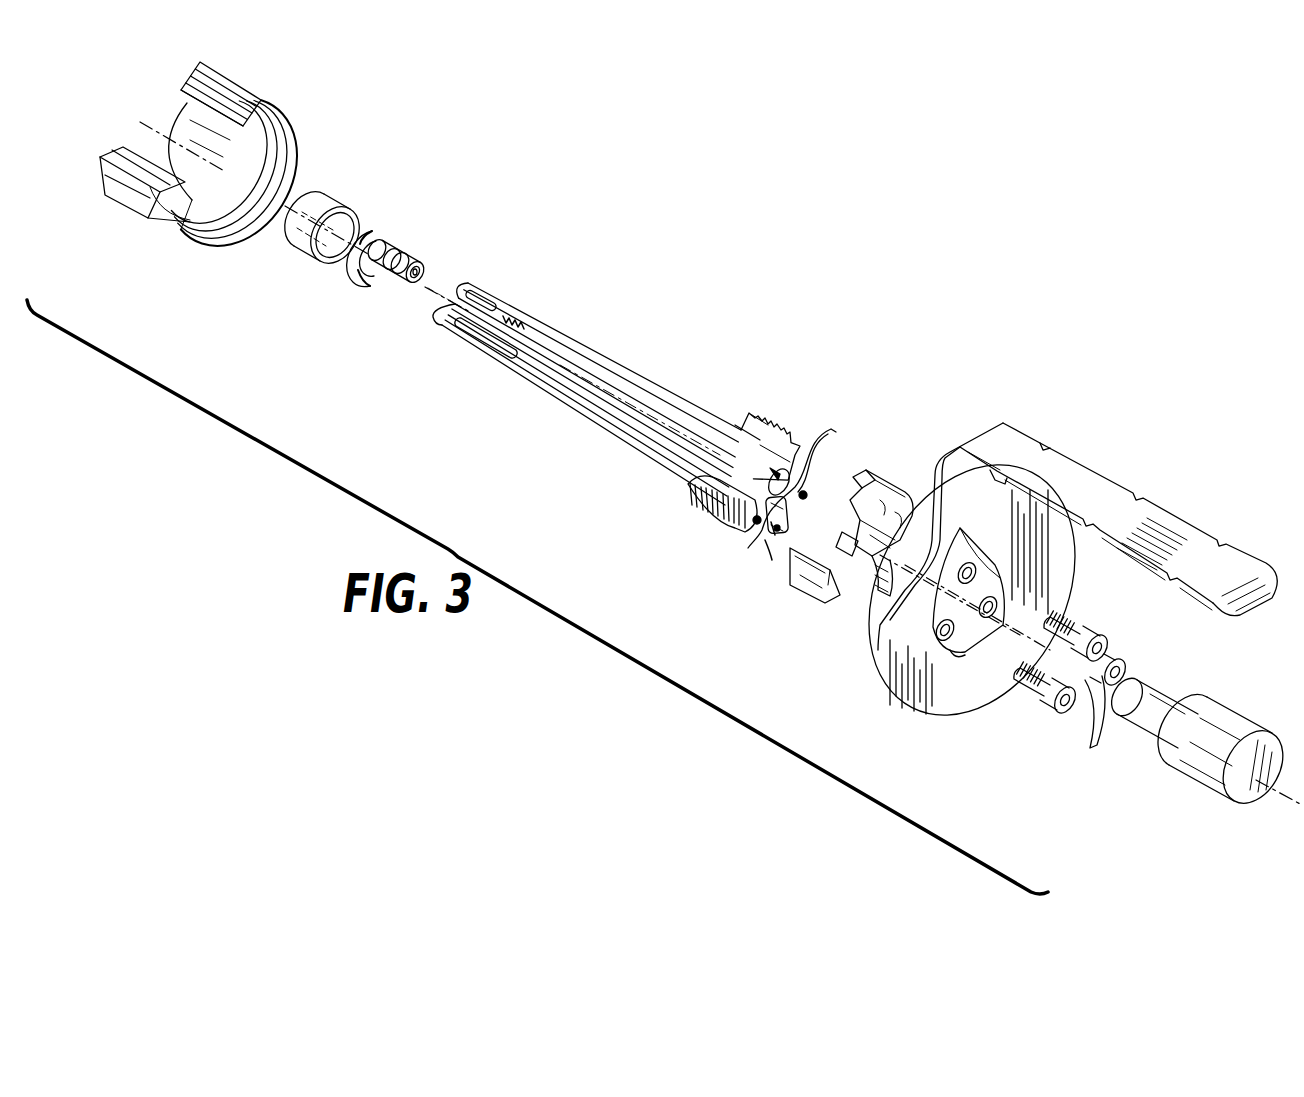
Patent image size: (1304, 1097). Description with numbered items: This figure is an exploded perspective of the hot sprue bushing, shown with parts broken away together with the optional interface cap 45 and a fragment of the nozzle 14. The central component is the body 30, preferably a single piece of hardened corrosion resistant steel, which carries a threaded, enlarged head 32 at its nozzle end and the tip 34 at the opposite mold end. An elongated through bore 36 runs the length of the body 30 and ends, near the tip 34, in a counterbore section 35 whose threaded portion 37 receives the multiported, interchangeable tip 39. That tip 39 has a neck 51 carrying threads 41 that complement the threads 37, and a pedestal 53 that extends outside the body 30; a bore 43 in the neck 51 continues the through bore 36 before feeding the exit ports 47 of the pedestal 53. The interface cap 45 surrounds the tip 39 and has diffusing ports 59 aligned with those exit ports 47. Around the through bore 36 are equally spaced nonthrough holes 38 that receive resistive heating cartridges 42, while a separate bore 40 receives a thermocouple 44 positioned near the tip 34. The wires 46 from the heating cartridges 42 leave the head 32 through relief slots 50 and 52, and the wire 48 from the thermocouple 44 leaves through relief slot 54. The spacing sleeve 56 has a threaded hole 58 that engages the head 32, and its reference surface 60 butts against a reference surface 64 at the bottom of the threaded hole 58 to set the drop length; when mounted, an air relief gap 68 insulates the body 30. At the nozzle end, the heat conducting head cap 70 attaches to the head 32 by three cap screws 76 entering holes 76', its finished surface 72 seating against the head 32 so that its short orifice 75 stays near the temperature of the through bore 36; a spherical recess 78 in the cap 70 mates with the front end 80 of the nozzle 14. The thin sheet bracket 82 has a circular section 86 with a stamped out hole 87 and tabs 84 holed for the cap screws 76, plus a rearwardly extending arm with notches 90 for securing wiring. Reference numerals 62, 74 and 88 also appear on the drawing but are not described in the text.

The nozzle 14 is at (1263, 725).
The body 30 is at (600, 352).
The threaded, enlarged head 32 is at (763, 415).
The tip 34 is at (477, 285).
The counterbore section 35 is at (486, 305).
The through bore 36 is at (603, 387).
The threaded portion of counterbore section 37 is at (500, 320).
The holes 38 is at (540, 322).
The multiported, interchangeable tip 39 is at (389, 210).
The bore 40 is at (488, 350).
The threads 41 is at (405, 260).
The heating cartridge 42 is at (630, 387).
The bore 43 is at (417, 290).
The thermocouple 44 is at (550, 378).
The interface cap 45 is at (343, 200).
The wires 46 is at (810, 438).
The exit port 47 is at (353, 277).
The wire 48 is at (745, 542).
The relief slot 50 is at (777, 538).
The neck 51 is at (424, 262).
The relief slot 52 is at (832, 480).
The pedestal 53 is at (371, 284).
The relief slot 54 is at (722, 510).
The spacing sleeve 56 is at (226, 88).
The threaded hole 58 is at (267, 157).
The diffusing ports 59 is at (297, 190).
The reference surface 60 is at (230, 148).
The lug 62 is at (190, 83).
The reference surface 64 is at (747, 420).
The air relief gap 68 is at (458, 340).
The head cap 70 is at (890, 495).
The finished surface 72 is at (840, 538).
The clip leg 74 is at (773, 532).
The orifice 75 is at (820, 560).
The cap screws 76 is at (1072, 685).
The holes 76' is at (780, 510).
The spherical recess 78 is at (874, 598).
The front end of nozzle 80 is at (1140, 690).
The bracket 82 is at (1097, 470).
The tabs 84 is at (961, 545).
The circular section 86 is at (937, 703).
The stamped out hole 87 is at (957, 652).
The hatched face 88 is at (1163, 547).
The notches 90 is at (1040, 443).